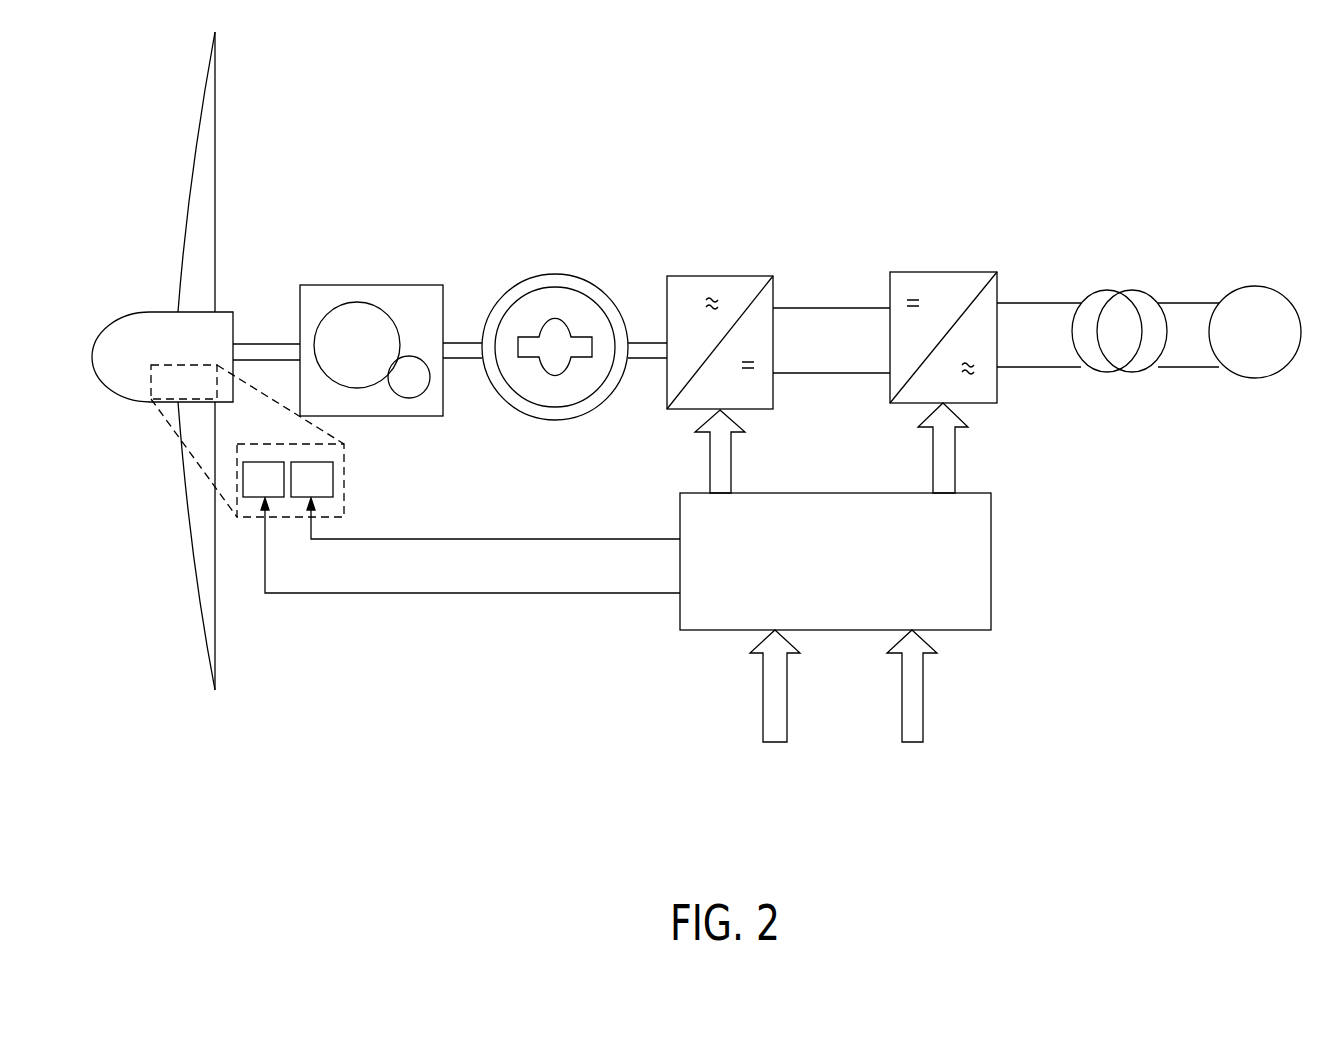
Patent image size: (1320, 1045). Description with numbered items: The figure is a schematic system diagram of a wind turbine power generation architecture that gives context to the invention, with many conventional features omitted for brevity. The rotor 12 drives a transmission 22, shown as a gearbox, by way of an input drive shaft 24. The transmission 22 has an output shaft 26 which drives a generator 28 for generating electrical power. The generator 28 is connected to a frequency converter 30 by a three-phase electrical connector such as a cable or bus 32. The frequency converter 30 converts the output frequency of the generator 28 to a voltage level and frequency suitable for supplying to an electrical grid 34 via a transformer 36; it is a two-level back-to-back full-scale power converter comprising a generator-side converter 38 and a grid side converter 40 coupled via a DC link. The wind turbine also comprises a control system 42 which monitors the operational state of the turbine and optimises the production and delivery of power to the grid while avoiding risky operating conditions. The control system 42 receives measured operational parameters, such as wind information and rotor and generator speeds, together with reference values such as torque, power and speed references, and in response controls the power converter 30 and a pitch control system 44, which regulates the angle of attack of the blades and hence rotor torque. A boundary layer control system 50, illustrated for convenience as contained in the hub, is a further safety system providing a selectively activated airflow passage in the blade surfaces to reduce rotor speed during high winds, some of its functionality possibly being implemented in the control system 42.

The rotor 12 is at (126, 294).
The transmission 22 is at (361, 285).
The input drive shaft 24 is at (262, 343).
The output shaft 26 is at (458, 341).
The generator 28 is at (583, 278).
The frequency converter 30 is at (832, 258).
The cable or bus 32 is at (650, 363).
The electrical grid 34 is at (1265, 288).
The transformer 36 is at (1153, 264).
The generator-side converter 38 is at (710, 274).
The grid side converter 40 is at (935, 270).
The control system 42 is at (818, 318).
The pitch control system 44 is at (271, 464).
The boundary layer control system 50 is at (278, 498).